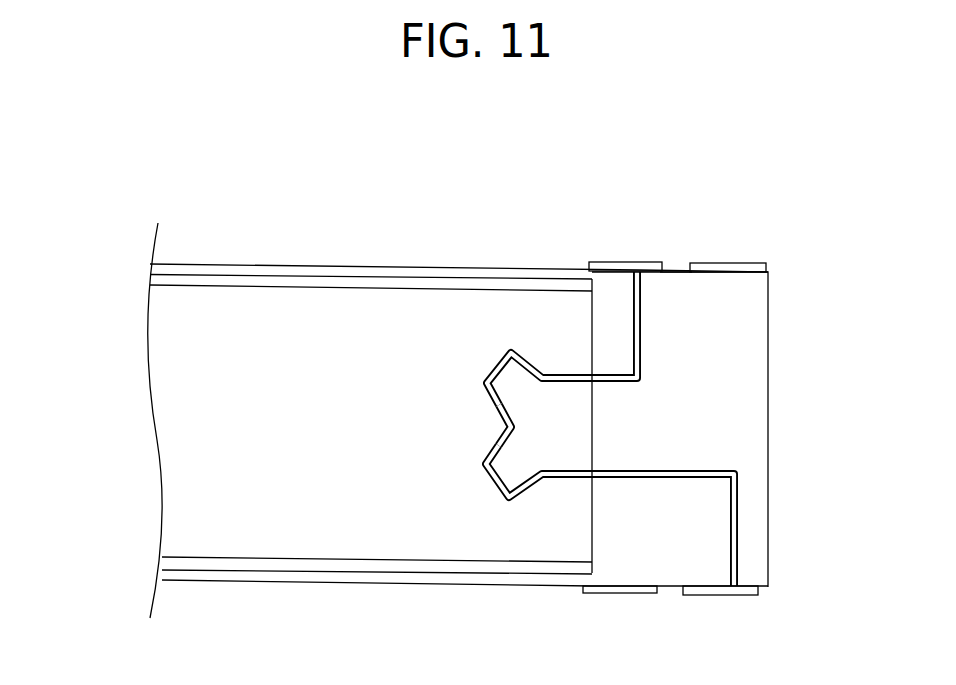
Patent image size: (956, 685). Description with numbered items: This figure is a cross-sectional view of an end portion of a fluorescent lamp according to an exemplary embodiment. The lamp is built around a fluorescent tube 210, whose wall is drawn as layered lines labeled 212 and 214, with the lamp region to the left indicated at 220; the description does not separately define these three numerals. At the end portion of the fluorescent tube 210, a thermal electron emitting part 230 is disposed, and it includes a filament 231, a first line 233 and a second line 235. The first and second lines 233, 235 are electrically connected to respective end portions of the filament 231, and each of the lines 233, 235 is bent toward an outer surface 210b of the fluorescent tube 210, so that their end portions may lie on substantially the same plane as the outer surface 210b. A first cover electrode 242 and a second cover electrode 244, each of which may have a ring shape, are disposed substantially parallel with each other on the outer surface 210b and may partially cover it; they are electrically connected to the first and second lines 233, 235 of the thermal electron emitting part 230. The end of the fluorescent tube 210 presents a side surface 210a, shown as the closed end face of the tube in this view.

The fluorescent tube 210 is at (390, 407).
The upper substrate 212 is at (150, 268).
The lower substrate 214 is at (157, 280).
The display device body 220 is at (165, 425).
The thermal electron emitting part 230 is at (528, 429).
The filament 231 is at (498, 405).
The first line 233 is at (551, 381).
The second line 235 is at (545, 468).
The first cover electrode 242 is at (618, 266).
The second cover electrode 244 is at (741, 266).
The side surface 210a is at (768, 429).
The outer surface 210b is at (674, 270).